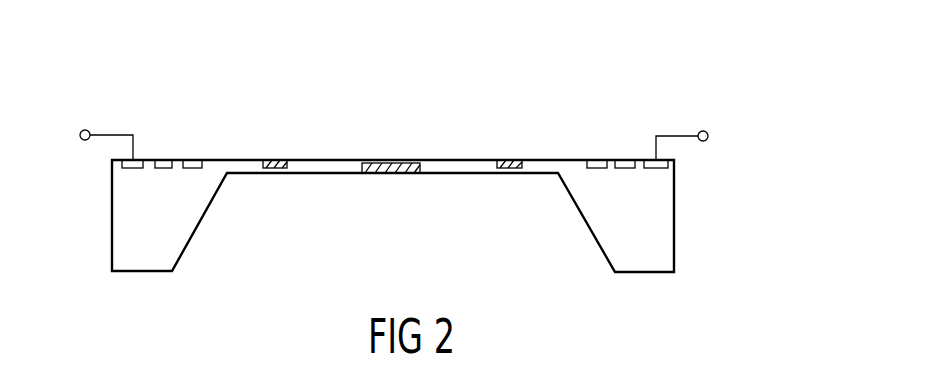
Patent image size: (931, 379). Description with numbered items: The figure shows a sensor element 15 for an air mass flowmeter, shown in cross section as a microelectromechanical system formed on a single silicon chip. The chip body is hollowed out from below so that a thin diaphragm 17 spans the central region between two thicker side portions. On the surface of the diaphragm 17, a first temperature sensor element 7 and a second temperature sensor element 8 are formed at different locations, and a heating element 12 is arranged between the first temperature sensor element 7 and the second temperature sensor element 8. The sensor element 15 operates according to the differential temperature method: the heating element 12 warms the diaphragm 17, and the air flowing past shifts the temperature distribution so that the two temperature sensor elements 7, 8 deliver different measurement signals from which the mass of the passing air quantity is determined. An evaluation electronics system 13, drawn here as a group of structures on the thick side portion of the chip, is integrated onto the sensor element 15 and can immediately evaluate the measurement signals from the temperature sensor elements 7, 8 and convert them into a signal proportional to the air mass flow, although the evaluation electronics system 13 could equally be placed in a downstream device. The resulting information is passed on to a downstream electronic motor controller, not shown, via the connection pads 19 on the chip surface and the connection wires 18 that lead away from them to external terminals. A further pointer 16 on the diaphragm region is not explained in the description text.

The first temperature sensor element 7 is at (512, 160).
The second temperature sensor element 8 is at (275, 158).
The heating element 12 is at (385, 173).
The evaluation electronics system 13 is at (165, 158).
The sensor element 15 is at (622, 78).
The membrane 16 is at (460, 160).
The diaphragm 17 is at (460, 173).
The connection wires 18 is at (704, 141).
The connection pads 19 is at (658, 169).